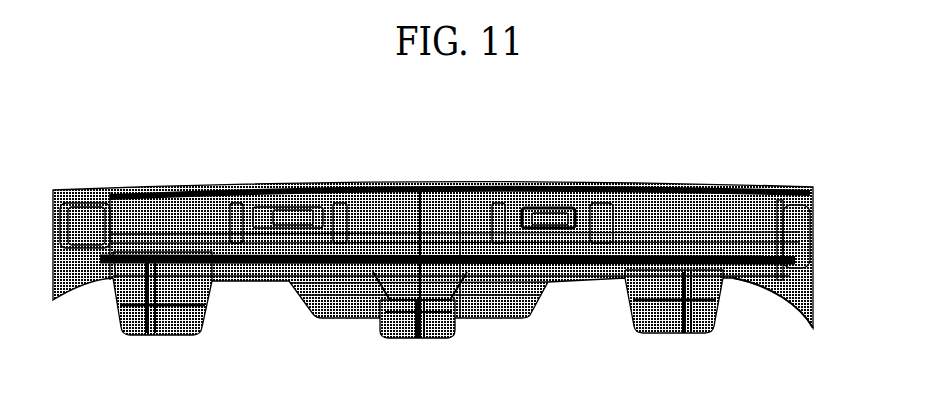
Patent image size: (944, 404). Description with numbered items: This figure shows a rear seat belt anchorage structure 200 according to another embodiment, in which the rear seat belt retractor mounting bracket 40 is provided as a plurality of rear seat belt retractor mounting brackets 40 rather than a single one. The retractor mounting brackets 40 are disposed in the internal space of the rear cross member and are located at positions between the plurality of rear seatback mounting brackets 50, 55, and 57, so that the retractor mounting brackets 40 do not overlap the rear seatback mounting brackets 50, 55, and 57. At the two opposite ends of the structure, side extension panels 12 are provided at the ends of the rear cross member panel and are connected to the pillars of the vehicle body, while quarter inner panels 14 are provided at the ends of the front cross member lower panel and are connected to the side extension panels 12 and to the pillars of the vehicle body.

The rear seat belt anchorage structure 200 is at (436, 118).
The side extension panel 12 is at (815, 198).
The quarter inner panel 14 is at (815, 283).
The rear seat belt retractor mounting bracket 40 is at (311, 180).
The rear seatback mounting bracket 50 is at (717, 309).
The rear seatback mounting bracket 55 is at (451, 330).
The rear seatback mounting bracket 57 is at (201, 330).